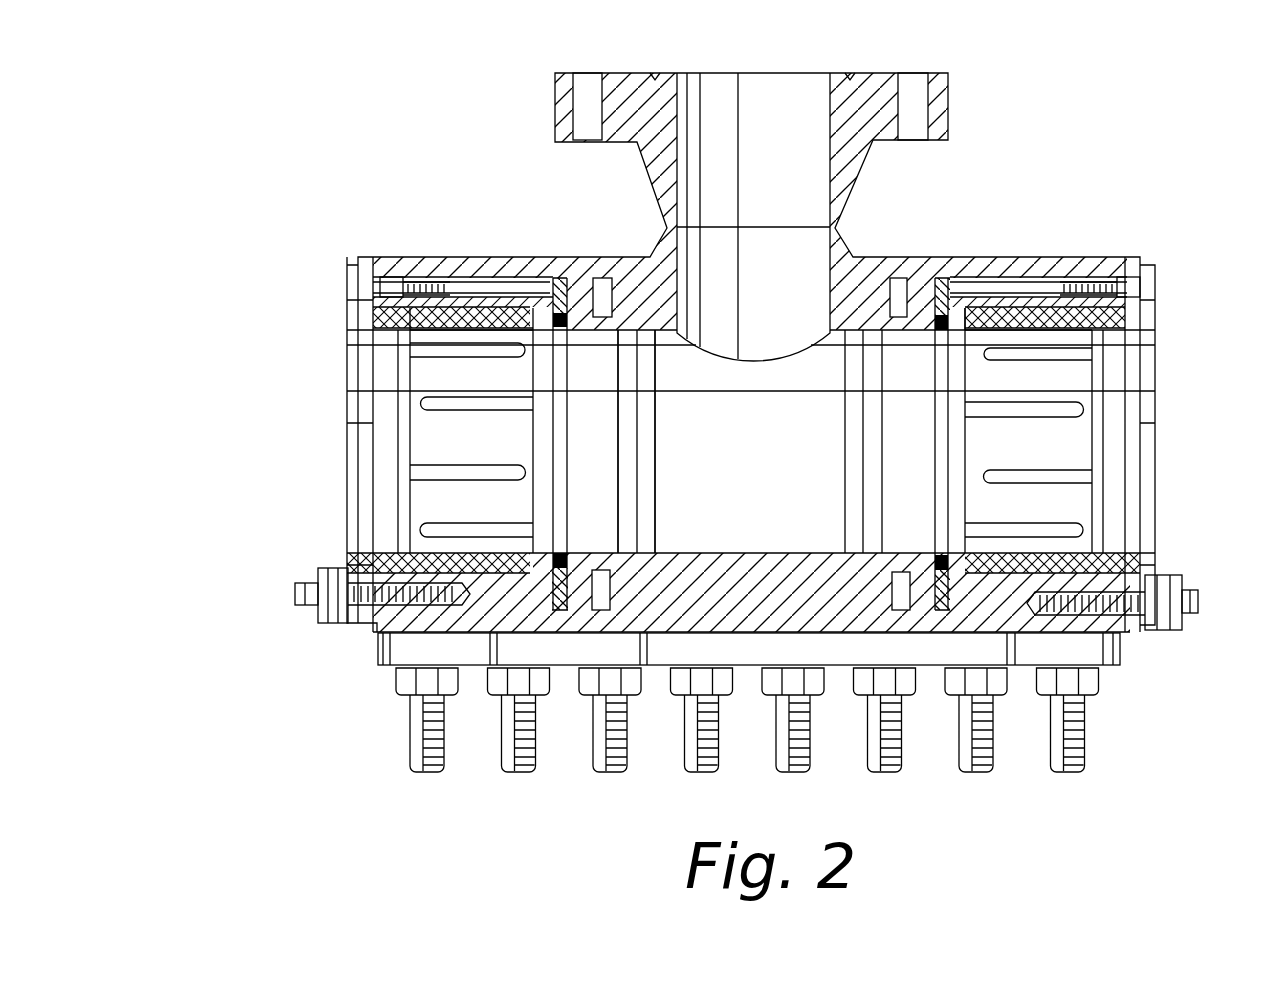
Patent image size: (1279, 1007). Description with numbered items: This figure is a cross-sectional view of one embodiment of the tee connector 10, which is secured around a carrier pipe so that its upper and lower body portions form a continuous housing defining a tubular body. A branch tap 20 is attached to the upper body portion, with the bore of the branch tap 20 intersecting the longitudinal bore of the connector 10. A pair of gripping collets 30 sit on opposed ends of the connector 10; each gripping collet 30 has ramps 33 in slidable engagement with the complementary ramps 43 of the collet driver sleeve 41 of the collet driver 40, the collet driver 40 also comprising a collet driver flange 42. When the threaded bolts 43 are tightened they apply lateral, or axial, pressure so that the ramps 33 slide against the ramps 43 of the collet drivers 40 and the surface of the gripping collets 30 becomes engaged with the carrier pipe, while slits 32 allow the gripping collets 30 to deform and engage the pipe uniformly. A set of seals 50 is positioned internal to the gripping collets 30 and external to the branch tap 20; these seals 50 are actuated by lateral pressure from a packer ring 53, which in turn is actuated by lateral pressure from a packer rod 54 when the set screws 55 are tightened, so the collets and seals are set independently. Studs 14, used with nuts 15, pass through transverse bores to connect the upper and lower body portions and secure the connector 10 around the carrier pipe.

The connector 10 is at (1134, 176).
The studs 14 is at (1088, 753).
The nuts 15 is at (1102, 693).
The branch tap 20 is at (538, 187).
The gripping collets 30 is at (443, 377).
The slits 32 is at (412, 473).
The ramps 33 is at (410, 343).
The collet driver 40 is at (347, 306).
The collet driver sleeve 41 is at (362, 566).
The collet driver flange 42 is at (353, 625).
The ramps 43 is at (295, 597).
The seals 50 is at (640, 473).
The packer ring 53 is at (583, 315).
The packer rod 54 is at (520, 280).
The set screws 55 is at (425, 260).